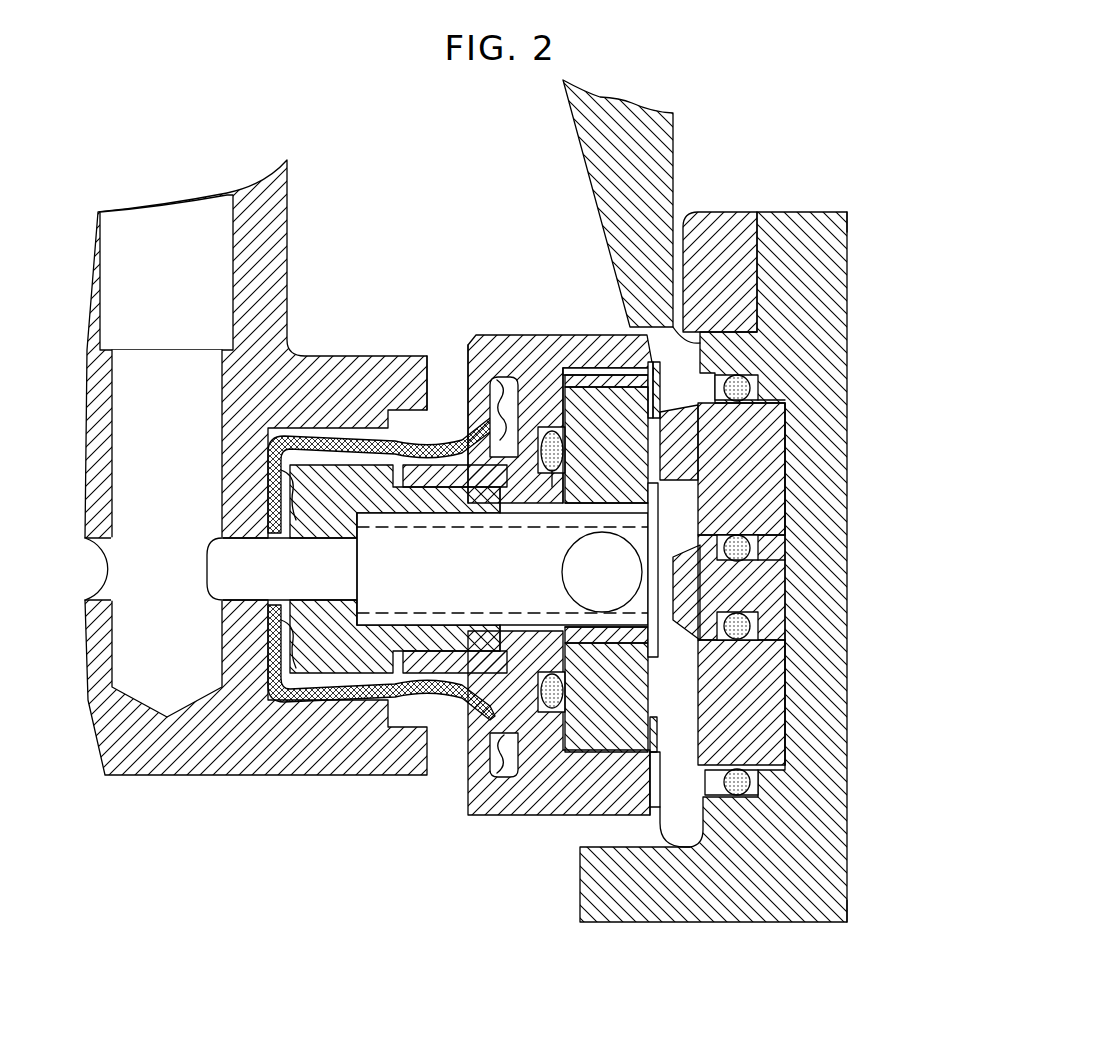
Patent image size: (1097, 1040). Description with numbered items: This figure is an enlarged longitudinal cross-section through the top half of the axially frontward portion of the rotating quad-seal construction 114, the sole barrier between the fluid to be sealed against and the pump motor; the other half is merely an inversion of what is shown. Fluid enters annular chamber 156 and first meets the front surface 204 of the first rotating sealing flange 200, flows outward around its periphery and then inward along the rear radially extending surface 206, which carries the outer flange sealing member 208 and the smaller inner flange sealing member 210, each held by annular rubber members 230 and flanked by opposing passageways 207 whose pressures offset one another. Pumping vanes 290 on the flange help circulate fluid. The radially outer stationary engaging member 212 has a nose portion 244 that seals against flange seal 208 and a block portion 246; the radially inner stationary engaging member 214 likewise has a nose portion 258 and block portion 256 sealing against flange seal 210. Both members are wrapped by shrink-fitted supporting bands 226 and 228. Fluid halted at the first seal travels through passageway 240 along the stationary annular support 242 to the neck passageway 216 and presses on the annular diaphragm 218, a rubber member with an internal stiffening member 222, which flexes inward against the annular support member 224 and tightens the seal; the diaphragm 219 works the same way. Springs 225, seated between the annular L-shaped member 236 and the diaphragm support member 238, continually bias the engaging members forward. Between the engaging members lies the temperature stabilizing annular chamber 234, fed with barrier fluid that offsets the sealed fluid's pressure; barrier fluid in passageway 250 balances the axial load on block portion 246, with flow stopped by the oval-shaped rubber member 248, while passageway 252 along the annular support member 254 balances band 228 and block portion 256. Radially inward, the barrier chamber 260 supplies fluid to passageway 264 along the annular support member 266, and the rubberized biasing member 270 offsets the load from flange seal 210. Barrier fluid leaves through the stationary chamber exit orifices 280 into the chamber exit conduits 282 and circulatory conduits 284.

The quad-seal construction 114 is at (368, 876).
The annular chamber 156 is at (750, 154).
The first rotating sealing flange 200 is at (822, 248).
The front surface 204 is at (852, 214).
The rear radially extending surface 206 is at (698, 343).
The opposing passageways 207 is at (785, 410).
The outer flange sealing member 208 is at (773, 457).
The inner flange sealing member 210 is at (762, 662).
The radially outer stationary engaging member 212 is at (583, 390).
The radially inner stationary engaging member 214 is at (703, 680).
The neck passageway 216 is at (443, 373).
The annular diaphragm 218 is at (337, 440).
The annular diaphragm 219 is at (270, 697).
The stiffening member 222 is at (311, 443).
The annular support member 224 is at (517, 378).
The springs 225 is at (496, 497).
The annular supporting/stiffening band 226 is at (567, 358).
The annular supporting/stiffening band 228 is at (602, 640).
The annular rubber members 230 is at (752, 388).
The temperature stabilizing annular chamber 234 is at (680, 520).
The annular L-shaped member 236 is at (427, 487).
The diaphragm support member 238 is at (290, 473).
The passageway 240 is at (650, 385).
The stationary annular support 242 is at (522, 372).
The nose portion 244 is at (672, 438).
The block portion 246 is at (594, 398).
The oval-shaped rubber member 248 is at (552, 472).
The passageway 250 is at (580, 515).
The passageway 252 is at (563, 607).
The annular support member 254 is at (520, 797).
The block portion 256 is at (576, 728).
The nose portion 258 is at (667, 678).
The barrier chamber 260 is at (318, 849).
The passageway 264 is at (641, 762).
The annular support member 266 is at (523, 808).
The rubberized biasing member 270 is at (565, 692).
The stationary chamber exit orifices 280 is at (557, 588).
The chamber exit conduits 282 is at (215, 584).
The circulatory conduits 284 is at (138, 286).
The pumping vanes 290 is at (787, 577).